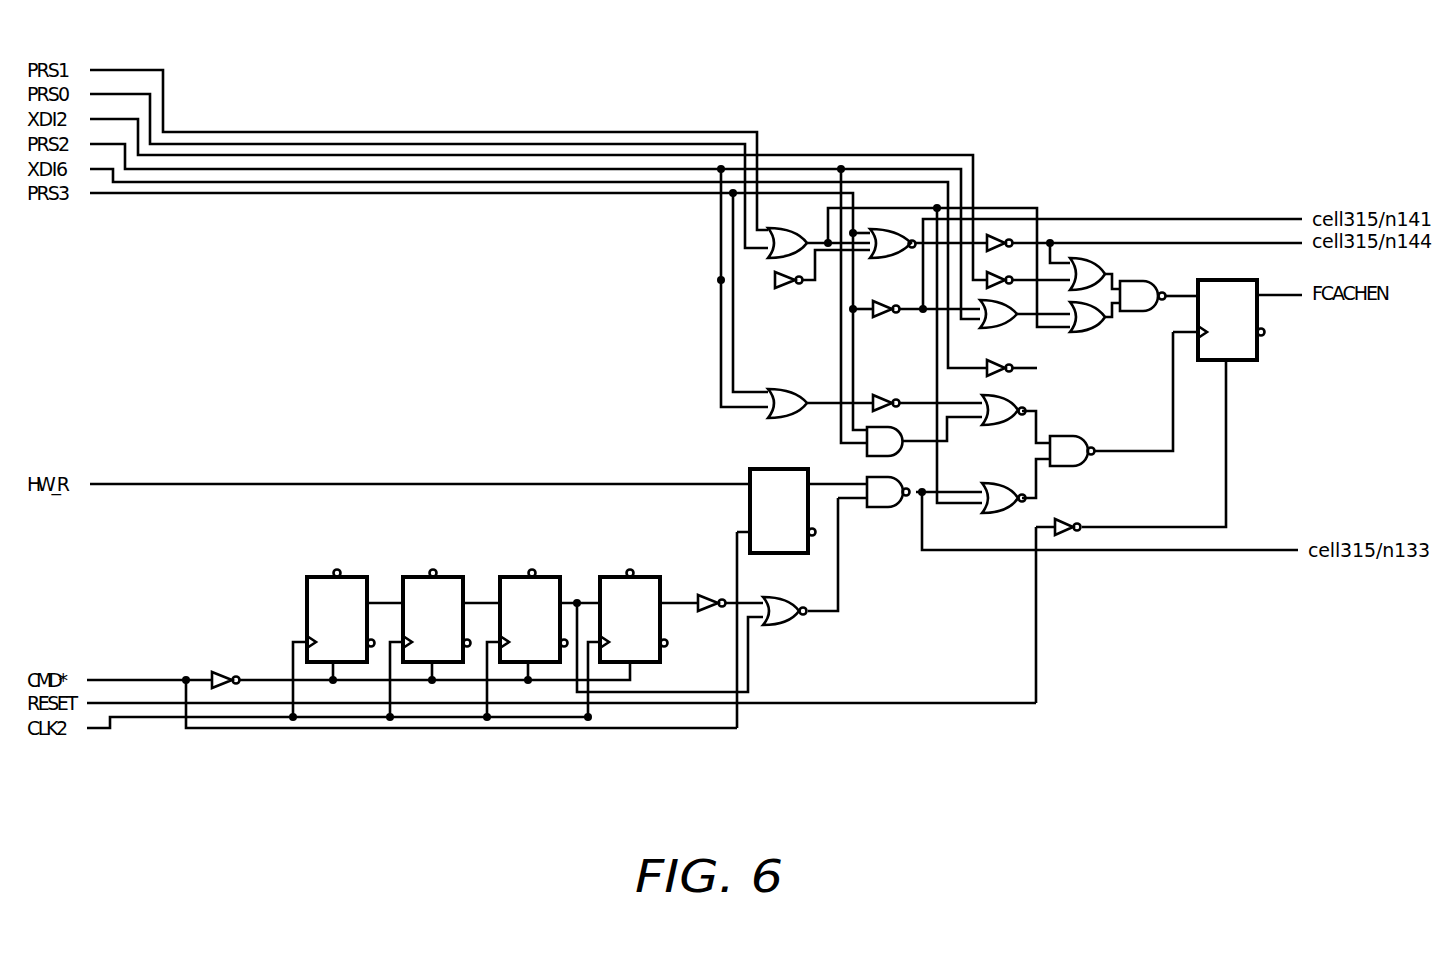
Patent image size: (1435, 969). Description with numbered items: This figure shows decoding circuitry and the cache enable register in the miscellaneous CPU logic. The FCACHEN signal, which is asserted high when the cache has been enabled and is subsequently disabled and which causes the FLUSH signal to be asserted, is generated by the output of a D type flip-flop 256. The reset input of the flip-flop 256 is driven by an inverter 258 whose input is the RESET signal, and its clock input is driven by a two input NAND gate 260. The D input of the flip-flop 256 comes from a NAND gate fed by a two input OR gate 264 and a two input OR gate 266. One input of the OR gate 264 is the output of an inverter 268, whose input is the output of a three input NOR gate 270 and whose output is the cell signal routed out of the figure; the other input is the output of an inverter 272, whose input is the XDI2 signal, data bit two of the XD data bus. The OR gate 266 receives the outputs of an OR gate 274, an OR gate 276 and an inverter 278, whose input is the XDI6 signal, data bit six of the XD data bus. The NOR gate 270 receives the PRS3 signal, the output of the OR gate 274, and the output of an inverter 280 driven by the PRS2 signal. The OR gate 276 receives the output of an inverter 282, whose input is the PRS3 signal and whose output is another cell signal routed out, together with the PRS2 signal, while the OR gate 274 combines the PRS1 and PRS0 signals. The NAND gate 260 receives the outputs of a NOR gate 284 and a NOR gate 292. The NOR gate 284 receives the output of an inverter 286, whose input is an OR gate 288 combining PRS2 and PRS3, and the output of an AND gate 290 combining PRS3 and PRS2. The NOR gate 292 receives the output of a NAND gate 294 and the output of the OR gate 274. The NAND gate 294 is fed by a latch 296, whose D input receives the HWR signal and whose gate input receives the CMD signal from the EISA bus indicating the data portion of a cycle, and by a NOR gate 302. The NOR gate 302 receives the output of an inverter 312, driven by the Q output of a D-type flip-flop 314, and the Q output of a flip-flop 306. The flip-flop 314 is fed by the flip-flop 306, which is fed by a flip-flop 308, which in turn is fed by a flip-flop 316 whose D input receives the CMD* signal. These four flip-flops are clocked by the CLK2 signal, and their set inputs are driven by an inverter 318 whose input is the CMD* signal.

The D type flip-flop 256 is at (1256, 362).
The inverter 258 is at (1068, 521).
The two input NAND gate 260 is at (1070, 436).
The two input OR gate 264 is at (1101, 258).
The two input OR gate 266 is at (1095, 332).
The inverter 268 is at (997, 233).
The three input NOR gate 270 is at (890, 258).
The inverter 272 is at (1000, 272).
The OR gate 274 is at (800, 219).
The OR gate 276 is at (1000, 330).
The inverter 278 is at (1010, 375).
The inverter 280 is at (786, 290).
The inverter 282 is at (884, 318).
The NOR gate 284 is at (987, 425).
The inverter 286 is at (882, 395).
The OR gate 288 is at (782, 389).
The AND gate 290 is at (873, 456).
The NOR gate 292 is at (993, 513).
The NAND gate 294 is at (882, 507).
The latch 296 is at (763, 469).
The NOR gate 302 is at (785, 625).
The flip-flop 306 is at (536, 570).
The flip-flop 308 is at (438, 570).
The inverter 312 is at (712, 612).
The D-type flip-flop 314 is at (634, 570).
The flip-flop 316 is at (342, 570).
The inverter 318 is at (213, 674).